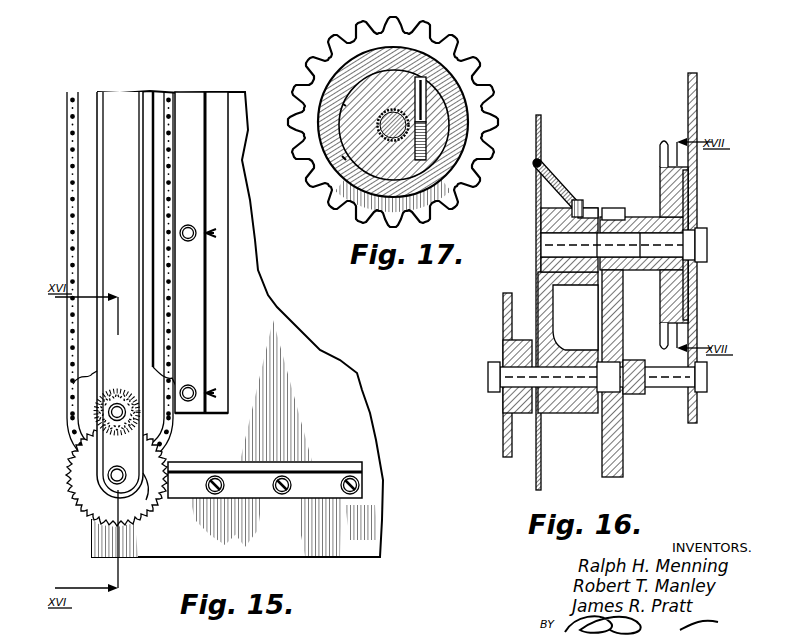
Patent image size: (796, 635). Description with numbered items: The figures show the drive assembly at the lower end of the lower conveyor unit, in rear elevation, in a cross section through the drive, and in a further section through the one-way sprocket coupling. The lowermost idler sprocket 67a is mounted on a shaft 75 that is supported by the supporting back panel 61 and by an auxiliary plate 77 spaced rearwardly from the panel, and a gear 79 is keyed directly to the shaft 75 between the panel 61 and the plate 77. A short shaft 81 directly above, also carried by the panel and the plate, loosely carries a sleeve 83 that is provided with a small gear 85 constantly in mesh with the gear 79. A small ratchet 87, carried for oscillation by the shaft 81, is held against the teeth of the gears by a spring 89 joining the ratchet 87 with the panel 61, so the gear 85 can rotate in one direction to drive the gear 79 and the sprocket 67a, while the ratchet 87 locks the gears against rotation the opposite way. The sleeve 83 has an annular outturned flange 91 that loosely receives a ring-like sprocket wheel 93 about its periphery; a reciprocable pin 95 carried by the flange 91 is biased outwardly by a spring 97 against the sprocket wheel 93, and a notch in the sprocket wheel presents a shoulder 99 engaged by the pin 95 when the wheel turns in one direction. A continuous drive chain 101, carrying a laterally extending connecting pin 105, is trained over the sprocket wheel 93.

In FIG. 15, the supporting back panel 61 is at (360, 428).
In FIG. 16, the supporting back panel 61 is at (542, 140).
In FIG. 16, the lowermost idler sprocket 67a is at (503, 347).
In FIG. 15, the shaft 75 is at (143, 503).
In FIG. 16, the shaft 75 is at (666, 387).
In FIG. 15, the auxiliary plate 77 is at (130, 472).
In FIG. 16, the auxiliary plate 77 is at (697, 412).
In FIG. 15, the gear 79 is at (82, 503).
In FIG. 16, the gear 79 is at (623, 450).
In FIG. 15, the short shaft 81 is at (109, 412).
In FIG. 17, the short shaft 81 is at (376, 93).
In FIG. 16, the short shaft 81 is at (707, 245).
In FIG. 16, the sleeve 83 is at (640, 217).
In FIG. 16, the small gear 85 is at (612, 208).
In FIG. 15, the ratchet 87 is at (119, 428).
In FIG. 16, the ratchet 87 is at (598, 278).
In FIG. 15, the spring 89 is at (122, 388).
In FIG. 16, the spring 89 is at (575, 160).
In FIG. 17, the annular outturned flange 91 is at (350, 100).
In FIG. 16, the annular outturned flange 91 is at (697, 200).
In FIG. 15, the ring-like sprocket wheel 93 is at (165, 388).
In FIG. 17, the ring-like sprocket wheel 93 is at (460, 70).
In FIG. 16, the ring-like sprocket wheel 93 is at (697, 178).
In FIG. 17, the reciprocable pin 95 is at (430, 100).
In FIG. 17, the spring 97 is at (430, 145).
In FIG. 17, the shoulder 99 is at (350, 196).
In FIG. 15, the drive chain 101 is at (172, 103).
In FIG. 15, the connecting pin 105 is at (70, 172).